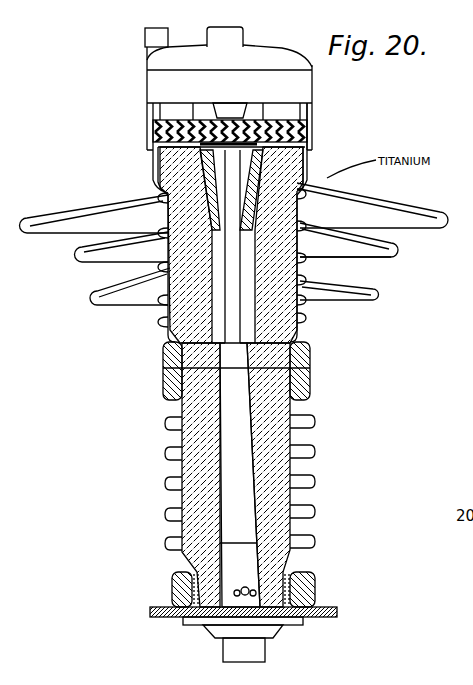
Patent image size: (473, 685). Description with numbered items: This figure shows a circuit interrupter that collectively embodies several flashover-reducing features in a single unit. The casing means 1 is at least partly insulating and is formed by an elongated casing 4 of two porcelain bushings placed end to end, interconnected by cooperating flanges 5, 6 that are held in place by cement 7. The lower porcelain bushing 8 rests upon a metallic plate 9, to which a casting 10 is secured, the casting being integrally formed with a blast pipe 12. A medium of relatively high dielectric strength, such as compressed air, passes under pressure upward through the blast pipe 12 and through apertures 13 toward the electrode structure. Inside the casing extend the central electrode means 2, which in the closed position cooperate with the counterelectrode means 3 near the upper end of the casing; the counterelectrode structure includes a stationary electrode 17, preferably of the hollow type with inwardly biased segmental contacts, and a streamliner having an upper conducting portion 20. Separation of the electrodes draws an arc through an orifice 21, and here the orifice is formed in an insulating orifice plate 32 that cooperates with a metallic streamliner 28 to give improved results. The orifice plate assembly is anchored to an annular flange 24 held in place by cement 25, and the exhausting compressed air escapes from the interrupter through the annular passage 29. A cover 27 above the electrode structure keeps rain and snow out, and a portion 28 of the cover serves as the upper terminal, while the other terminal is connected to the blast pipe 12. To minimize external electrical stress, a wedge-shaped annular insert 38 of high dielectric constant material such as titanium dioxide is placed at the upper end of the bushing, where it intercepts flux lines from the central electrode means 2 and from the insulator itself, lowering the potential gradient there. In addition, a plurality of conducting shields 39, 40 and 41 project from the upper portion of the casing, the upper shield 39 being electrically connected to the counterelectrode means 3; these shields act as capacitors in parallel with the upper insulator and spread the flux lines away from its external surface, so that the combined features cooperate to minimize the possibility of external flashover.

The casing means 1 is at (334, 364).
The central electrode means 2 is at (252, 289).
The counterelectrode means 3 is at (234, 111).
The elongated casing 4 is at (308, 258).
The flange 5 is at (163, 348).
The flange 6 is at (163, 383).
The cement 7 is at (183, 406).
The lower porcelain bushing 8 is at (314, 423).
The metallic plate 9 is at (330, 606).
The casting 10 is at (212, 630).
The blast pipe 12 is at (266, 651).
The apertures 13 is at (244, 584).
The stationary electrode 17 is at (228, 93).
The upper conducting portion 20 is at (308, 133).
The orifice 21 is at (217, 127).
The annular flange 24 is at (153, 166).
The cement 25 is at (158, 178).
The cover 27 is at (272, 52).
The portion of the cover 28 is at (168, 33).
The annular passage 29 is at (150, 163).
The insulating orifice plate 32 is at (158, 128).
The wedge-shaped annular insert 38 is at (300, 164).
The upper conducting shield 39 is at (372, 197).
The conducting shield 40 is at (330, 228).
The conducting shield 41 is at (348, 303).